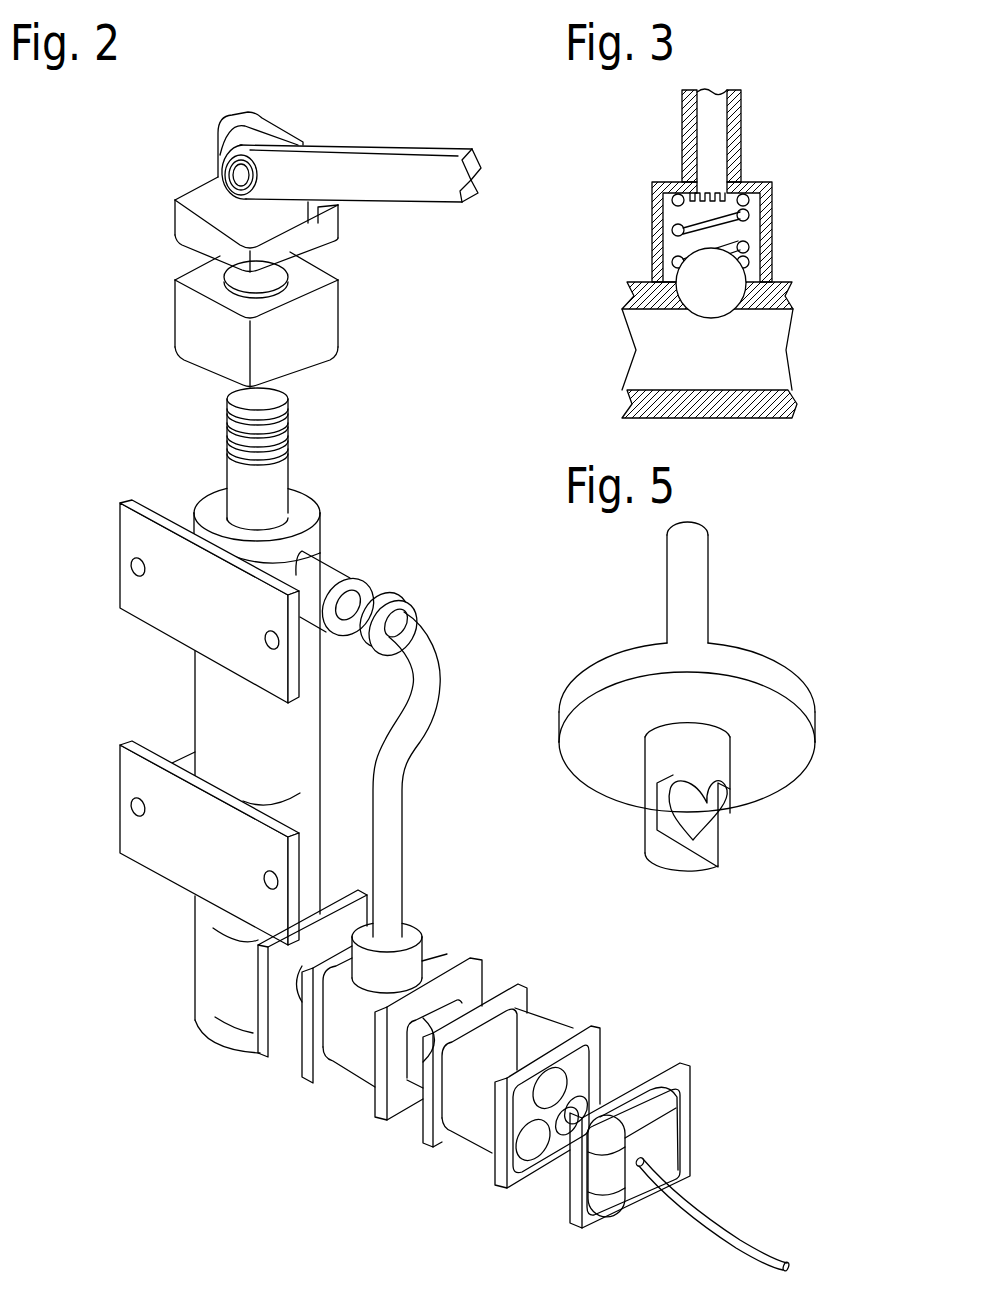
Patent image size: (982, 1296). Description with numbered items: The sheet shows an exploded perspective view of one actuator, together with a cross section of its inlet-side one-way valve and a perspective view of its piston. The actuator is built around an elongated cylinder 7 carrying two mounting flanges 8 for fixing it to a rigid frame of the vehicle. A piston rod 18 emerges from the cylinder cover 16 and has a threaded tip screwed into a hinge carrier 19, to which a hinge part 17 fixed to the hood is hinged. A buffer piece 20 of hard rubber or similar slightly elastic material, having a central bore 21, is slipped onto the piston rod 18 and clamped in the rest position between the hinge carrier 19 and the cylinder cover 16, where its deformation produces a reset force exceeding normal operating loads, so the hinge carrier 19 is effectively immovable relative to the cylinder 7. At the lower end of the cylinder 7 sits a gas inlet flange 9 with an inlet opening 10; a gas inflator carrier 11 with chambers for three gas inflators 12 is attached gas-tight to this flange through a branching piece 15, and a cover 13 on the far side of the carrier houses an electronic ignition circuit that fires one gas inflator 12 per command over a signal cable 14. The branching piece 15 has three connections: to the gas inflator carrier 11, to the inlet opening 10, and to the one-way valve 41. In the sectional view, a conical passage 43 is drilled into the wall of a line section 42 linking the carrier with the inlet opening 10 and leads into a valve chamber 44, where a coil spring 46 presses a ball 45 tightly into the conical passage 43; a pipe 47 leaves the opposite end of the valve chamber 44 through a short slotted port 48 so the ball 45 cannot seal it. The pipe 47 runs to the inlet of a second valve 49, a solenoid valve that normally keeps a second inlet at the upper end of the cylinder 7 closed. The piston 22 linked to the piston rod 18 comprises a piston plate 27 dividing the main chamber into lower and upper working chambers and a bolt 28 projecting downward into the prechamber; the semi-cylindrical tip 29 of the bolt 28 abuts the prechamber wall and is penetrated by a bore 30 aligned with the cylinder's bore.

In FIG. 2, the cylinder 7 is at (210, 715).
In FIG. 2, the mounting flanges 8 is at (140, 580).
In FIG. 2, the gas inlet flange 9 is at (275, 1035).
In FIG. 2, the inlet opening 10 is at (300, 993).
In FIG. 2, the gas inflator carrier 11 is at (528, 1033).
In FIG. 2, the gas inflators 12 is at (537, 1135).
In FIG. 2, the cover 13 is at (658, 1138).
In FIG. 2, the signal cable 14 is at (693, 1203).
In FIG. 2, the branching piece 15 is at (357, 1052).
In FIG. 3, the branching piece 15 is at (730, 402).
In FIG. 2, the cylinder cover 16 is at (217, 507).
In FIG. 2, the hinge part 17 is at (347, 152).
In FIG. 2, the piston rod 18 is at (272, 445).
In FIG. 5, the piston rod 18 is at (692, 592).
In FIG. 2, the hinge carrier 19 is at (228, 147).
In FIG. 2, the buffer piece 20 is at (312, 322).
In FIG. 2, the central bore 21 is at (278, 282).
In FIG. 5, the piston 22 is at (587, 617).
In FIG. 5, the piston plate 27 is at (767, 673).
In FIG. 5, the bolt 28 is at (662, 765).
In FIG. 5, the tip 29 is at (647, 828).
In FIG. 5, the bore 30 is at (690, 820).
In FIG. 2, the one-way valve 41 is at (420, 975).
In FIG. 3, the one-way valve 41 is at (632, 243).
In FIG. 3, the line section 42 is at (710, 365).
In FIG. 3, the conical passage 43 is at (652, 313).
In FIG. 3, the valve chamber 44 is at (753, 230).
In FIG. 3, the ball 45 is at (725, 297).
In FIG. 3, the coil spring 46 is at (697, 227).
In FIG. 2, the pipe 47 is at (398, 792).
In FIG. 3, the pipe 47 is at (717, 122).
In FIG. 3, the slotted port 48 is at (707, 197).
In FIG. 2, the second valve 49 is at (343, 572).